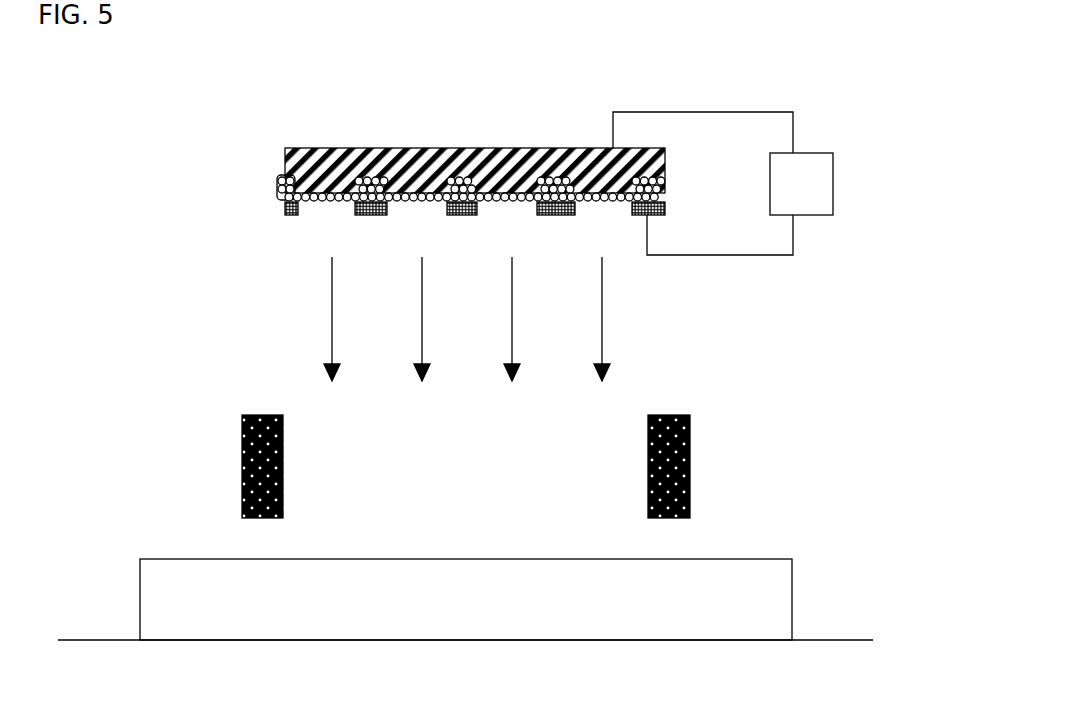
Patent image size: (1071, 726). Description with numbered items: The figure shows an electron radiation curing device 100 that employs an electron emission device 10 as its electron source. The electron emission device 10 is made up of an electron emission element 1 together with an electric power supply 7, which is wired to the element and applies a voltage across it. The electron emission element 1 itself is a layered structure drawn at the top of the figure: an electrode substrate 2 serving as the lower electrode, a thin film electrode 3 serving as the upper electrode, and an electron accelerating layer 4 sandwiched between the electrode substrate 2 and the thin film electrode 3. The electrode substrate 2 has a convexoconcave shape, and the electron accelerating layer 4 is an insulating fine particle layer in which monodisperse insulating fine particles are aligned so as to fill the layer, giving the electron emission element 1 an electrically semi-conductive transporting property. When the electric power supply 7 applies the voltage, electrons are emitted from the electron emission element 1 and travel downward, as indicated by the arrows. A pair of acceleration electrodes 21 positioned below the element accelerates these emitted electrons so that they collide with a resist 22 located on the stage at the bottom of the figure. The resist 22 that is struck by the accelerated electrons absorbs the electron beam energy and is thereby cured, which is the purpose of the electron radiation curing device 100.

The electron radiation curing device 100 is at (140, 316).
The electron emission device 10 is at (563, 133).
The electron emission element 1 is at (230, 138).
The electrode substrate 2 is at (285, 162).
The electron accelerating layer 4 is at (277, 187).
The thin film electrode 3 is at (285, 207).
The electric power supply 7 is at (833, 185).
The acceleration electrode 21 is at (242, 428).
The resist 22 is at (457, 618).